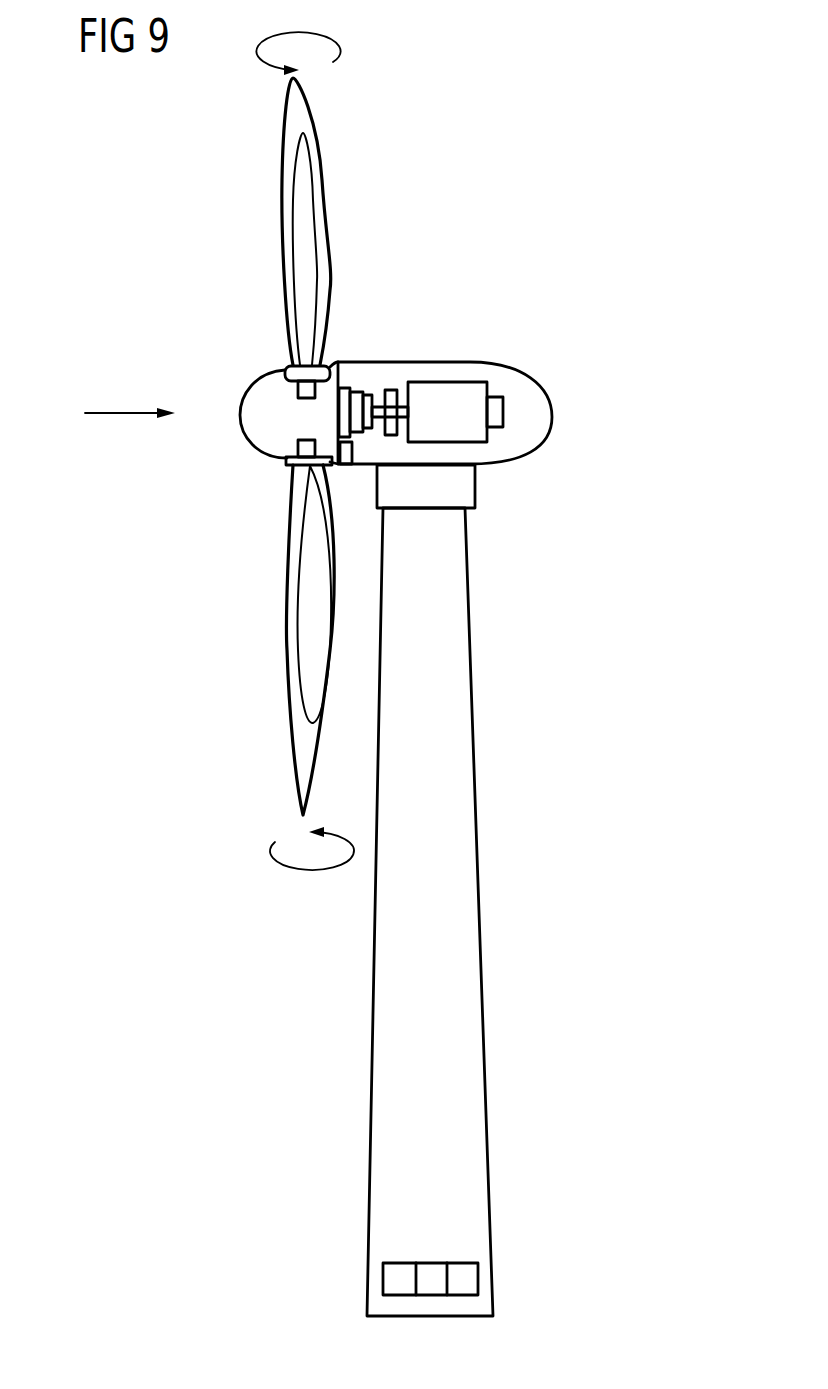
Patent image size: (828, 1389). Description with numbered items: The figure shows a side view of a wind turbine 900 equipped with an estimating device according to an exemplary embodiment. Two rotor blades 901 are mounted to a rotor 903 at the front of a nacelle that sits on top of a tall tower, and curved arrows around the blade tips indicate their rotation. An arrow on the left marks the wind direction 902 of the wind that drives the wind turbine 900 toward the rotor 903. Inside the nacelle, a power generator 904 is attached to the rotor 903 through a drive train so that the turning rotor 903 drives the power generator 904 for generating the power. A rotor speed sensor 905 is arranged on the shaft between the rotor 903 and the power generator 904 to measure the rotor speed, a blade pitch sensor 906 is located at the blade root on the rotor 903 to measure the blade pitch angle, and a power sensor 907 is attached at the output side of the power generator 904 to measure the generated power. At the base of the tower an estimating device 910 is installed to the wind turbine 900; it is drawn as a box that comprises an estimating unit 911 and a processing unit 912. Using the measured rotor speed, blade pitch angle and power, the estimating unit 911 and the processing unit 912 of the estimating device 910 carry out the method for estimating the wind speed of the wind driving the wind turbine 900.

The wind turbine 900 is at (620, 327).
The rotor blade 901 is at (298, 119).
The wind direction 902 is at (113, 412).
The rotor 903 is at (212, 468).
The power generator 904 is at (447, 393).
The rotor speed sensor 905 is at (390, 391).
The blade pitch sensor 906 is at (290, 362).
The power sensor 907 is at (495, 412).
The estimating device 910 is at (506, 1262).
The estimating unit 911 is at (463, 1272).
The processing unit 912 is at (430, 1285).